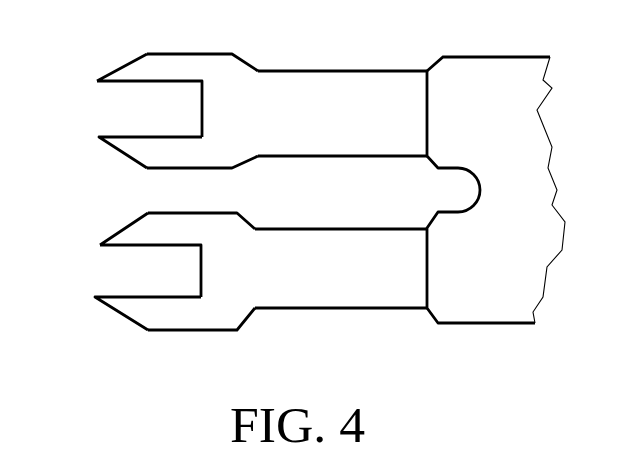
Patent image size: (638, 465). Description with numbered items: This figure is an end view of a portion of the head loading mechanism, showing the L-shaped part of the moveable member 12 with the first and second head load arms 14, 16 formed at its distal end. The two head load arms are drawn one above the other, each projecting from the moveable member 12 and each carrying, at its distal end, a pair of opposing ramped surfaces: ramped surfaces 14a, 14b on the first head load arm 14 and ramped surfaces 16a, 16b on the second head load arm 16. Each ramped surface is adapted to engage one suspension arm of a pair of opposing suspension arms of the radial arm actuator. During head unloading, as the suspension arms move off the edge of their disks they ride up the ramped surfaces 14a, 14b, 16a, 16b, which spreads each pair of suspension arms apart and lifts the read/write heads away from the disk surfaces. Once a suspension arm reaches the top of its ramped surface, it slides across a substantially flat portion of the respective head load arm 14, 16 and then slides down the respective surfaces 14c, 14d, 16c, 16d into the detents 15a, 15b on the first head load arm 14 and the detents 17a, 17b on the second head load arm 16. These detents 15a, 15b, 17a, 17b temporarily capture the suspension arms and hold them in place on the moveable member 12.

The moveable member 12 is at (507, 57).
The first head load arm 14 is at (236, 104).
The ramped surface 14a is at (115, 71).
The ramped surface 14b is at (127, 157).
The surface 14c is at (245, 62).
The surface 14d is at (245, 162).
The detent 15a is at (343, 71).
The detent 15b is at (350, 157).
The second head load arm 16 is at (237, 281).
The ramped surface 16a is at (122, 231).
The ramped surface 16b is at (120, 313).
The surface 16c is at (248, 222).
The surface 16d is at (247, 318).
The detent 17a is at (350, 229).
The detent 17b is at (348, 310).